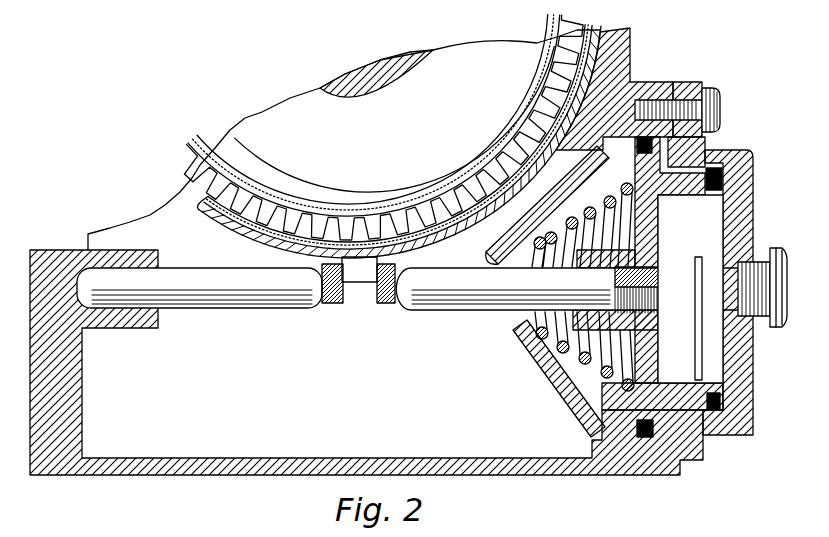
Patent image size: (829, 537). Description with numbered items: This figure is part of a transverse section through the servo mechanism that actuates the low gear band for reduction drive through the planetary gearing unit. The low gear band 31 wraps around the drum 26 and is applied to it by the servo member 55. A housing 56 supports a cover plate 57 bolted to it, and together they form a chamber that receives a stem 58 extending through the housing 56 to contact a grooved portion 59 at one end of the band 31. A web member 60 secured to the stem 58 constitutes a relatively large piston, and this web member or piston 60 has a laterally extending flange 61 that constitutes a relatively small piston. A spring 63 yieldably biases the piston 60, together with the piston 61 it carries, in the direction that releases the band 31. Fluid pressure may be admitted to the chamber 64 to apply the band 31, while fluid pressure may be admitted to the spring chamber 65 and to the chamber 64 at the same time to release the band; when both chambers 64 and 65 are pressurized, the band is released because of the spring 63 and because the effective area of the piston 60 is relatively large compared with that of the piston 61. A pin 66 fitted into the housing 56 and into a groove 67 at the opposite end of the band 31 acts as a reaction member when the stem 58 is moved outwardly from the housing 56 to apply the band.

The drum 26 is at (197, 173).
The low gear band 31 is at (192, 193).
The servo member 55 is at (754, 147).
The housing 56 is at (99, 478).
The cover plate 57 is at (745, 350).
The stem 58 is at (465, 290).
The grooved portion 59 is at (398, 305).
The web member 60 is at (640, 405).
The laterally extending flange 61 is at (718, 187).
The spring 63 is at (575, 380).
The chamber 64 is at (730, 370).
The spring chamber 65 is at (572, 357).
The pin 66 is at (222, 290).
The groove 67 is at (322, 305).